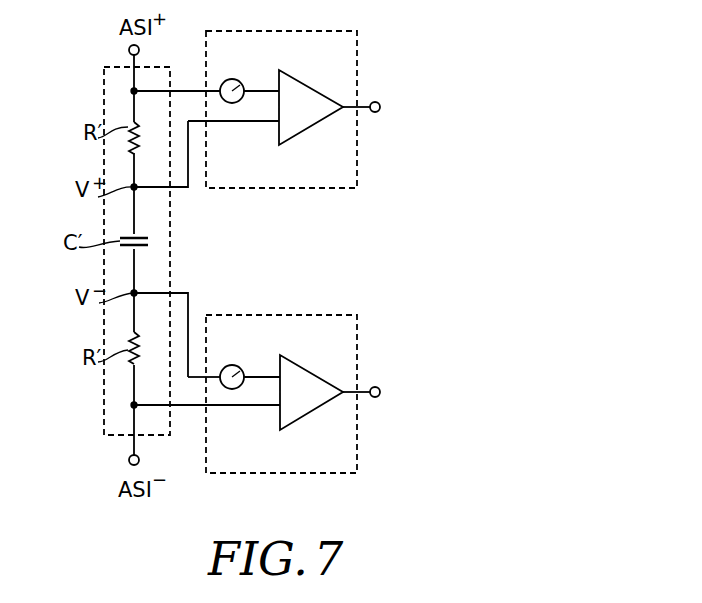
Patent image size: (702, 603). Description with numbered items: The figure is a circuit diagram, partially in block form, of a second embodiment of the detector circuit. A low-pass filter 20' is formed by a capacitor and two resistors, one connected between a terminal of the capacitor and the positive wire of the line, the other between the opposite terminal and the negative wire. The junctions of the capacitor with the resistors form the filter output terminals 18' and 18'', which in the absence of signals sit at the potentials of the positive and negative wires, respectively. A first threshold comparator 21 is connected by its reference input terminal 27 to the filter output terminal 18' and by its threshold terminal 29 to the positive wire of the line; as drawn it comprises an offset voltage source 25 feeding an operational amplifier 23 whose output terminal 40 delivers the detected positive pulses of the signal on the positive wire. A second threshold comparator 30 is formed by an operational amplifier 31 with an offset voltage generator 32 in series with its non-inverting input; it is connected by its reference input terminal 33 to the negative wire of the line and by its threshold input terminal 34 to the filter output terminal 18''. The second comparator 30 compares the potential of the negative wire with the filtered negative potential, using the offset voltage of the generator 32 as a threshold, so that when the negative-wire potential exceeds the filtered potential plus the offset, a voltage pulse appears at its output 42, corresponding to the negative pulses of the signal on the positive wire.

The low-pass filter 20' is at (116, 259).
The output terminal of the filter 18' is at (186, 173).
The output terminal of the filter 18'' is at (190, 321).
The first threshold comparator 21 is at (327, 31).
The threshold terminal 29 is at (188, 90).
The first offset voltage source Vos 25 is at (241, 83).
The first comparator 23 is at (302, 118).
The reference input terminal 27 is at (196, 123).
The first comparator output terminal 40 is at (373, 99).
The second threshold comparator 30 is at (325, 473).
The threshold input terminal 34 is at (193, 378).
The offset voltage generator 32 is at (241, 367).
The operational amplifier 31 is at (303, 402).
The reference input terminal 33 is at (193, 407).
The output of the comparator 42 is at (373, 386).